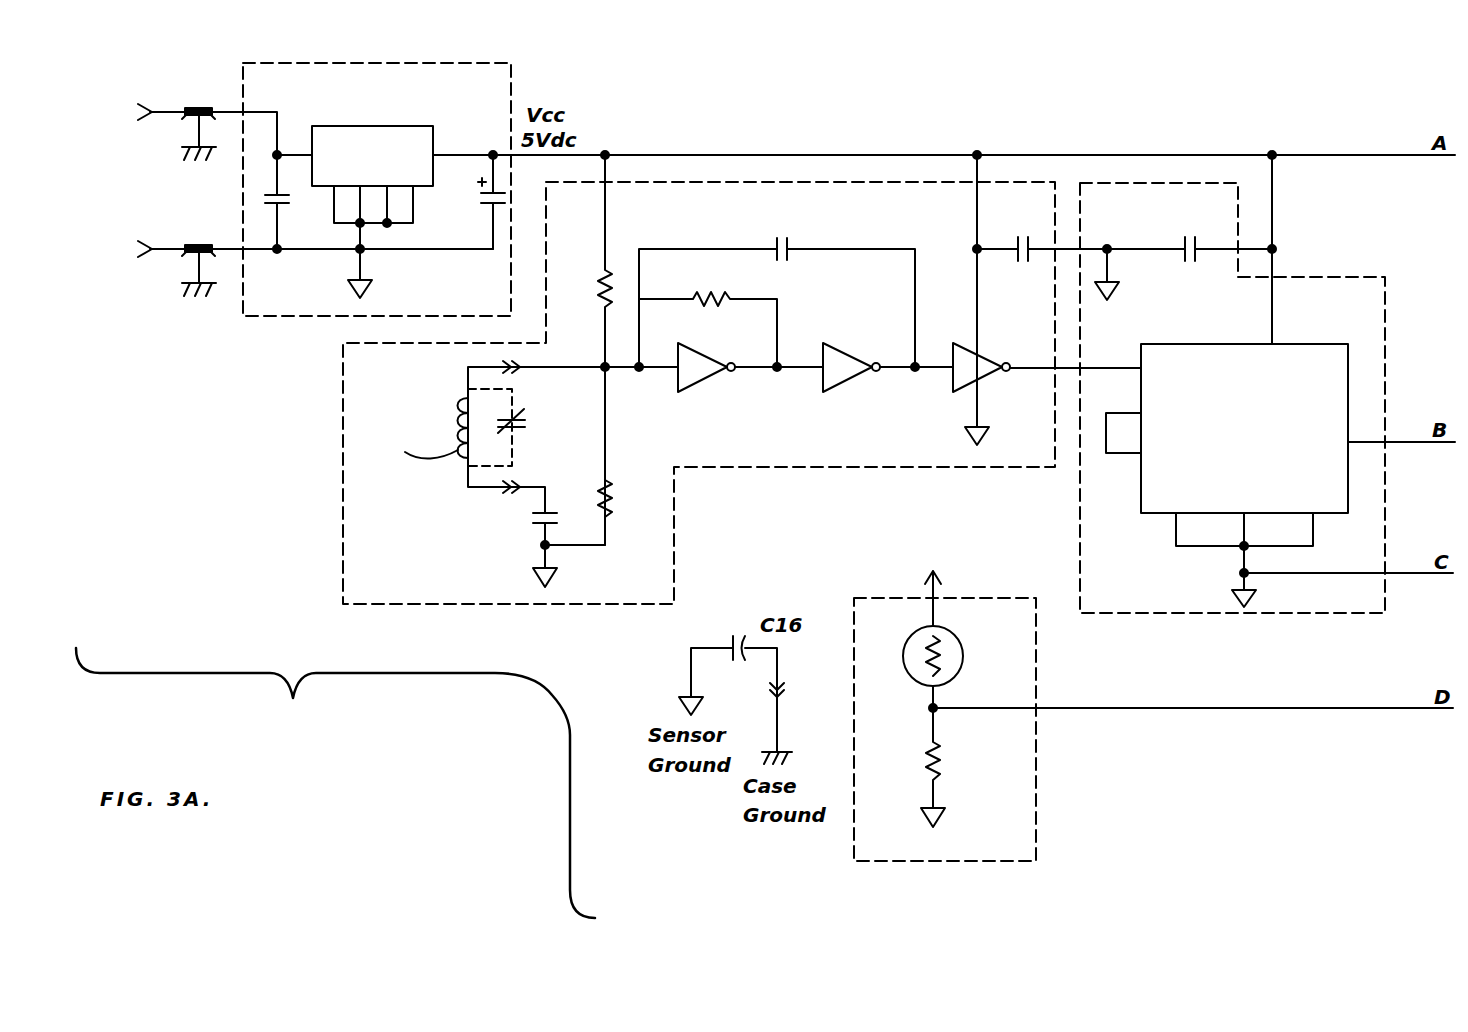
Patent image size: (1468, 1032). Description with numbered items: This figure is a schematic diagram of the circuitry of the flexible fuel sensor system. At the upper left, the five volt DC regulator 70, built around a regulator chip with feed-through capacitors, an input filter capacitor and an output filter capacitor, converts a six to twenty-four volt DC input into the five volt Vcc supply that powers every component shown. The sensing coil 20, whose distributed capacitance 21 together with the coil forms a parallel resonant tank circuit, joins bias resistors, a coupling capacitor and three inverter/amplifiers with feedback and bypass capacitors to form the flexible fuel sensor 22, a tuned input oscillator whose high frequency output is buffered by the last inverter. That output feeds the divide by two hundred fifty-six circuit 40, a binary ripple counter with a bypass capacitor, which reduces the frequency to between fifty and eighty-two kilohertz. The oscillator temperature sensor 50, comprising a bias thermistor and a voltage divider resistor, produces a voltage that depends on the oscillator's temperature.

The sensing coil 20 is at (481, 474).
The distributed capacitance 21 is at (524, 412).
The flexible fuel sensor 22 is at (762, 474).
The divide by 256 circuit 40 is at (1351, 276).
The oscillator temperature sensor 50 is at (1050, 766).
The 5 volt DC regulator 70 is at (247, 318).